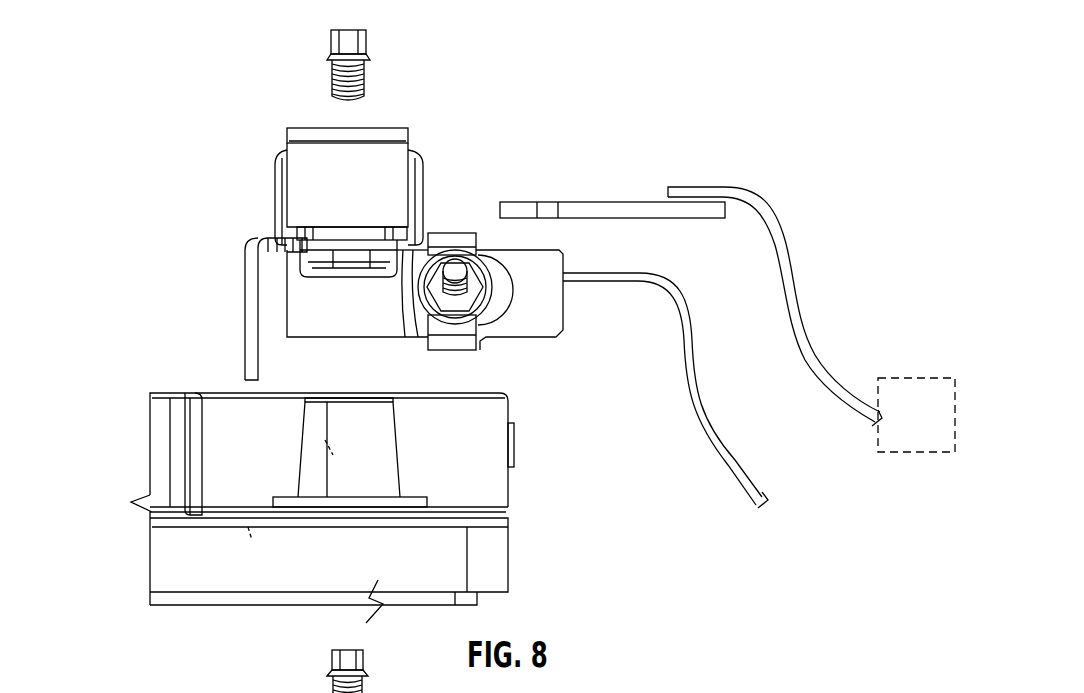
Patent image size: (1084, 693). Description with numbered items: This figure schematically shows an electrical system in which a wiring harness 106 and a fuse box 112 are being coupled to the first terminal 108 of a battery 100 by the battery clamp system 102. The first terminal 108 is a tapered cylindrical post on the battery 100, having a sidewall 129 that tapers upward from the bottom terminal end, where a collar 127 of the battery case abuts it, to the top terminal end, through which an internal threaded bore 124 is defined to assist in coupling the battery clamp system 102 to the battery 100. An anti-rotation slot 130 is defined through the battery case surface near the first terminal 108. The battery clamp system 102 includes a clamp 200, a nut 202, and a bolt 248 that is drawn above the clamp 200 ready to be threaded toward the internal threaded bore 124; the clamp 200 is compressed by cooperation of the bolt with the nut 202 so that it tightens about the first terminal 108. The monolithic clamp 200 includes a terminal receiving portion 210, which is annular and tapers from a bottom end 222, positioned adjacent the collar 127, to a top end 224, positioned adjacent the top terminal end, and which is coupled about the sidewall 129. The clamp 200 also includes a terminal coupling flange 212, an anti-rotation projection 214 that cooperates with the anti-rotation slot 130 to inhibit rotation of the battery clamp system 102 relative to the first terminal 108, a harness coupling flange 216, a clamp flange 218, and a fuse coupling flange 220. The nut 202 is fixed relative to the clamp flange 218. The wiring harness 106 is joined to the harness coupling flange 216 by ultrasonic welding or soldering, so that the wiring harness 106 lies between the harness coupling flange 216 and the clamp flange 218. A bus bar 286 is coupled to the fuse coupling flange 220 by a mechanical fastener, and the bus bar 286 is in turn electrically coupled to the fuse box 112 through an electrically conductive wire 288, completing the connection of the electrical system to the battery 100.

The bolt 248 is at (370, 46).
The clamp 200 is at (416, 110).
The battery clamp system 102 is at (693, 253).
The bus bar 286 is at (598, 202).
The electrically conductive wire 288 is at (808, 346).
The fuse coupling flange 220 is at (275, 185).
The terminal coupling flange 212 is at (290, 230).
The nut 202 is at (490, 270).
The clamp flange 218 is at (508, 292).
The top end 224 is at (298, 255).
The anti-rotation projection 214 is at (226, 309).
The bottom end 222 is at (290, 338).
The terminal receiving portion 210 is at (297, 340).
The harness coupling flange 216 is at (575, 322).
The wiring harness 106 is at (712, 447).
The fuse box 112 is at (939, 424).
The battery 100 is at (321, 527).
The internal threaded bore 124 is at (330, 447).
The first terminal 108 is at (255, 460).
The sidewall 129 is at (372, 476).
The collar 127 is at (333, 515).
The anti-rotation slot 130 is at (250, 530).